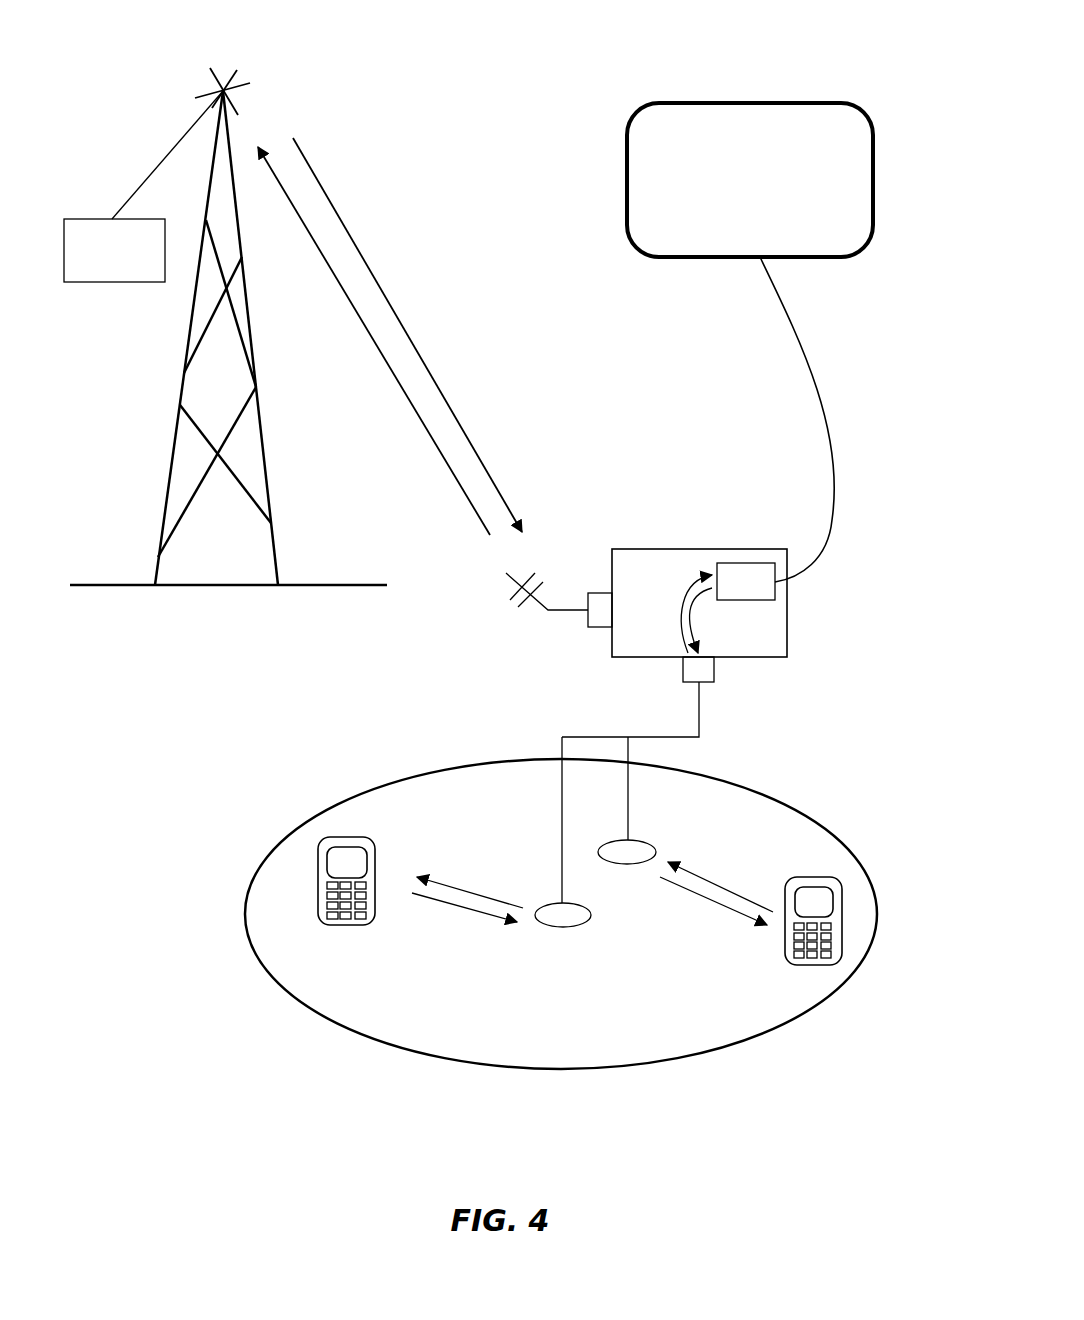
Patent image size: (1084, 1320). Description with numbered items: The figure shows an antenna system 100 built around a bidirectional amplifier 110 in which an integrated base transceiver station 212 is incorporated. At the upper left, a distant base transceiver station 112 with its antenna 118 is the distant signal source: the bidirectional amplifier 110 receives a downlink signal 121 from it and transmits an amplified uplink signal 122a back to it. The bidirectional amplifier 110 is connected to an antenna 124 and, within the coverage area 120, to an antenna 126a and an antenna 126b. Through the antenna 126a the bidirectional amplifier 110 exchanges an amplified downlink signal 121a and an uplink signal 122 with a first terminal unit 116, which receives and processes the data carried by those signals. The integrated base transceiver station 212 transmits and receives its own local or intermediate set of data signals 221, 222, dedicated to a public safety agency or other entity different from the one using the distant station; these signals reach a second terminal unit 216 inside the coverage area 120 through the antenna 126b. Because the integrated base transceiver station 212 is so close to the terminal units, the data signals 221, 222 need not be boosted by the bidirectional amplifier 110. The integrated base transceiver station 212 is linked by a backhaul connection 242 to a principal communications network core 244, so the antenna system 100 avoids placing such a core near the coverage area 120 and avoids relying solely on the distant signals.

The antenna system 100 is at (168, 1073).
The antenna 118 is at (287, 77).
The distant base transceiver station 112 is at (122, 300).
The downlink signal 121 is at (407, 335).
The uplink signal 122a is at (374, 341).
The principal communications network core 244 is at (672, 278).
The backhaul connection 242 is at (852, 455).
The bidirectional amplifier 110 is at (653, 535).
The integrated base transceiver station 212 is at (775, 606).
The external antenna of device 124 is at (488, 597).
The data signal 222 is at (702, 743).
The data signal 221 is at (713, 761).
The coverage area 120 is at (648, 1067).
The antenna 126a is at (542, 937).
The antenna 126b is at (665, 835).
The downlink signal 121a is at (470, 883).
The uplink signal 122 is at (464, 916).
The first terminal unit 116 is at (303, 903).
The second terminal unit 216 is at (808, 977).